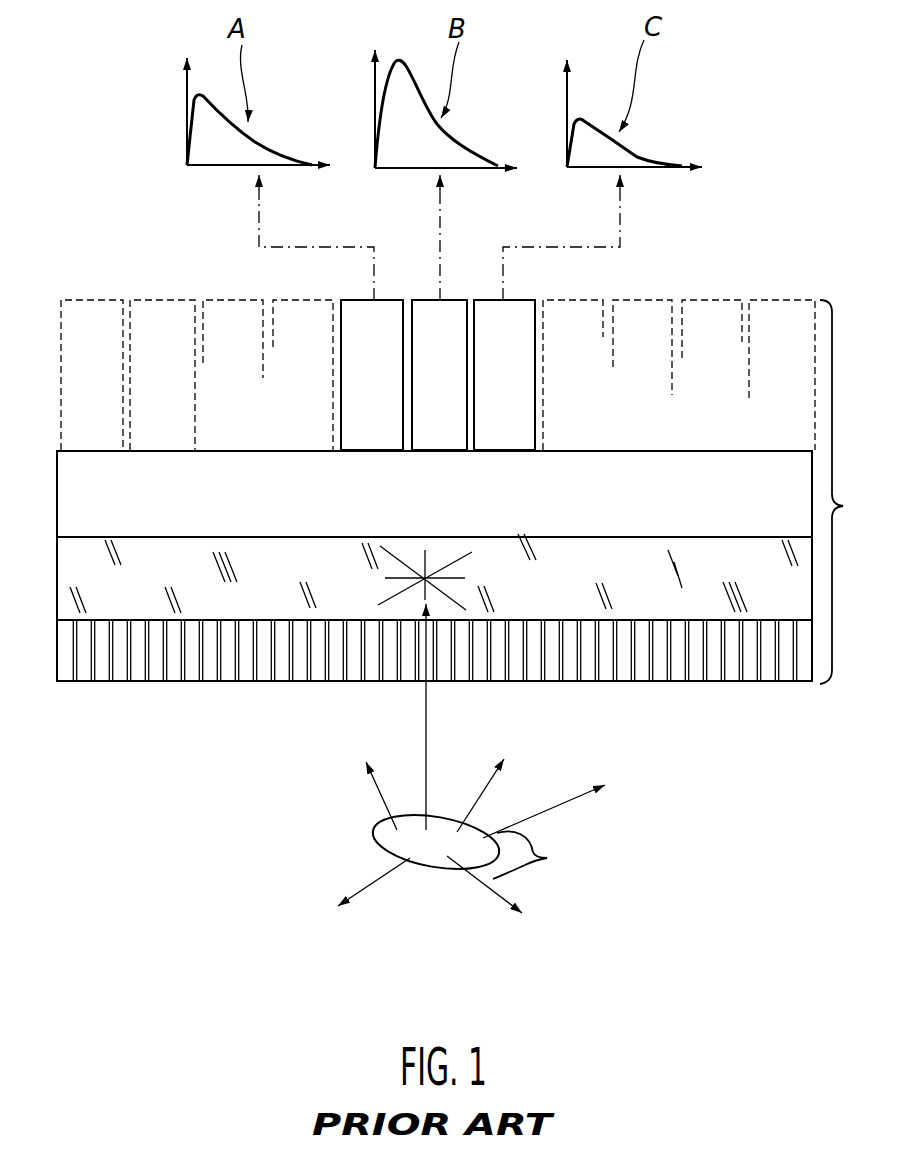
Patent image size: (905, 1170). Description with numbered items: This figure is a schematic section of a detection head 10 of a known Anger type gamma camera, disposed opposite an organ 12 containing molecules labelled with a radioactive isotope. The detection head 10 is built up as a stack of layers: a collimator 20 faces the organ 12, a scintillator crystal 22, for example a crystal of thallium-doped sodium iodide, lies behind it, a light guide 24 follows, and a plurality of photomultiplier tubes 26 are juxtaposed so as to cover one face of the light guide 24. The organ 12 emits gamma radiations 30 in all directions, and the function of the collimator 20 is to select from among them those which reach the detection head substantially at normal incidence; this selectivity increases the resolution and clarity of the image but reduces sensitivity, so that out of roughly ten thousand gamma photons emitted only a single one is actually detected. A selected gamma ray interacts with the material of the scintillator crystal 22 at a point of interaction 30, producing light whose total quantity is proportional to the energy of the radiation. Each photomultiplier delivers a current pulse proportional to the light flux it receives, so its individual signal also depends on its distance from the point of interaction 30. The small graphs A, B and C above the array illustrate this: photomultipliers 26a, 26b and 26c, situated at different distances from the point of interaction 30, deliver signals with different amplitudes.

The detection head 10 is at (850, 492).
The organ 12 is at (400, 842).
The collimator 20 is at (100, 658).
The scintillator crystal 22 is at (108, 587).
The light guide 24 is at (88, 478).
The photomultiplier tubes 26 is at (58, 337).
The photomultiplier 26a is at (361, 325).
The photomultiplier 26b is at (432, 430).
The photomultiplier 26c is at (497, 330).
The gamma radiations / point of interaction 30 is at (447, 555).